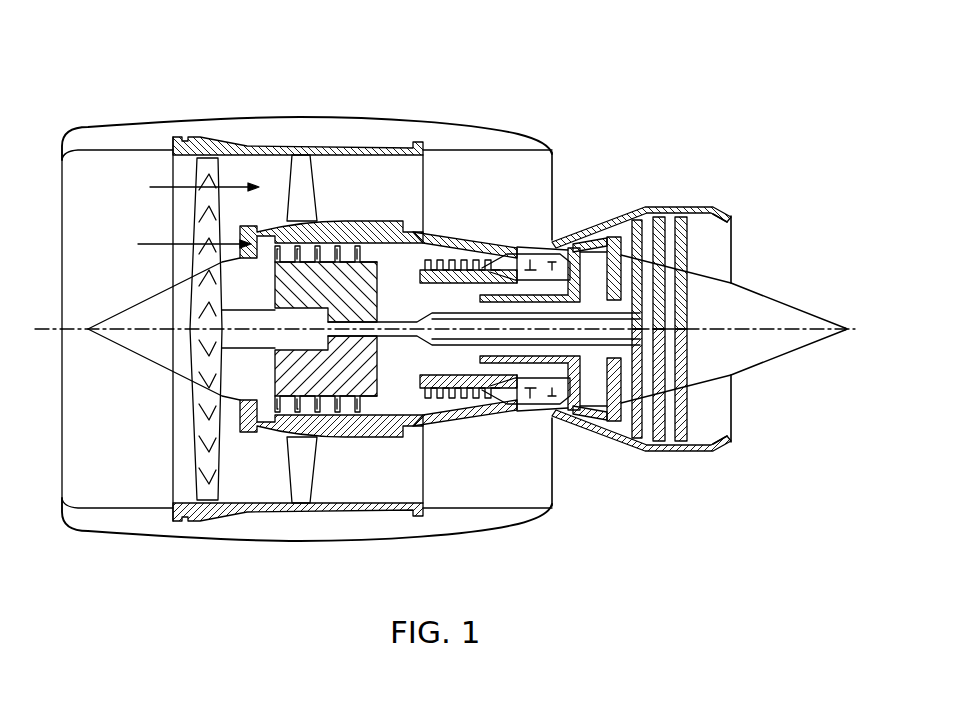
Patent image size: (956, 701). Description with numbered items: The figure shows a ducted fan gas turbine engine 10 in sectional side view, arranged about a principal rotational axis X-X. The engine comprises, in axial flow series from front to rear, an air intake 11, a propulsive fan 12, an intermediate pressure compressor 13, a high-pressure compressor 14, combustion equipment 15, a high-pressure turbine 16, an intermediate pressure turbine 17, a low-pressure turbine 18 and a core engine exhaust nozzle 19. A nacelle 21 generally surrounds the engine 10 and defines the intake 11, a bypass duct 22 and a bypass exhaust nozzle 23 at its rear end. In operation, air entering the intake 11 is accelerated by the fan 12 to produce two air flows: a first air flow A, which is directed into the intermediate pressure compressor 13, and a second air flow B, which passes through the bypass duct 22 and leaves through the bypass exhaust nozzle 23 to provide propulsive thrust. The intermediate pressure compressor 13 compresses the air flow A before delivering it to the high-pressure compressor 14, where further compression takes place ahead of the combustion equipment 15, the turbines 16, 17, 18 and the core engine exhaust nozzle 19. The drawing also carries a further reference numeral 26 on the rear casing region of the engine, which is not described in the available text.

The ducted fan gas turbine engine 10 is at (455, 271).
The air intake 11 is at (104, 150).
The propulsive fan 12 is at (195, 457).
The intermediate pressure compressor 13 is at (340, 418).
The high-pressure compressor 14 is at (468, 262).
The combustion equipment 15 is at (500, 417).
The high-pressure turbine 16 is at (568, 420).
The intermediate pressure turbine 17 is at (617, 247).
The low-pressure turbine 18 is at (638, 427).
The core engine exhaust nozzle 19 is at (720, 207).
The nacelle 21 is at (347, 127).
The bypass duct 22 is at (504, 192).
The bypass exhaust nozzle 23 is at (552, 148).
The exhaust casing 26 is at (638, 205).